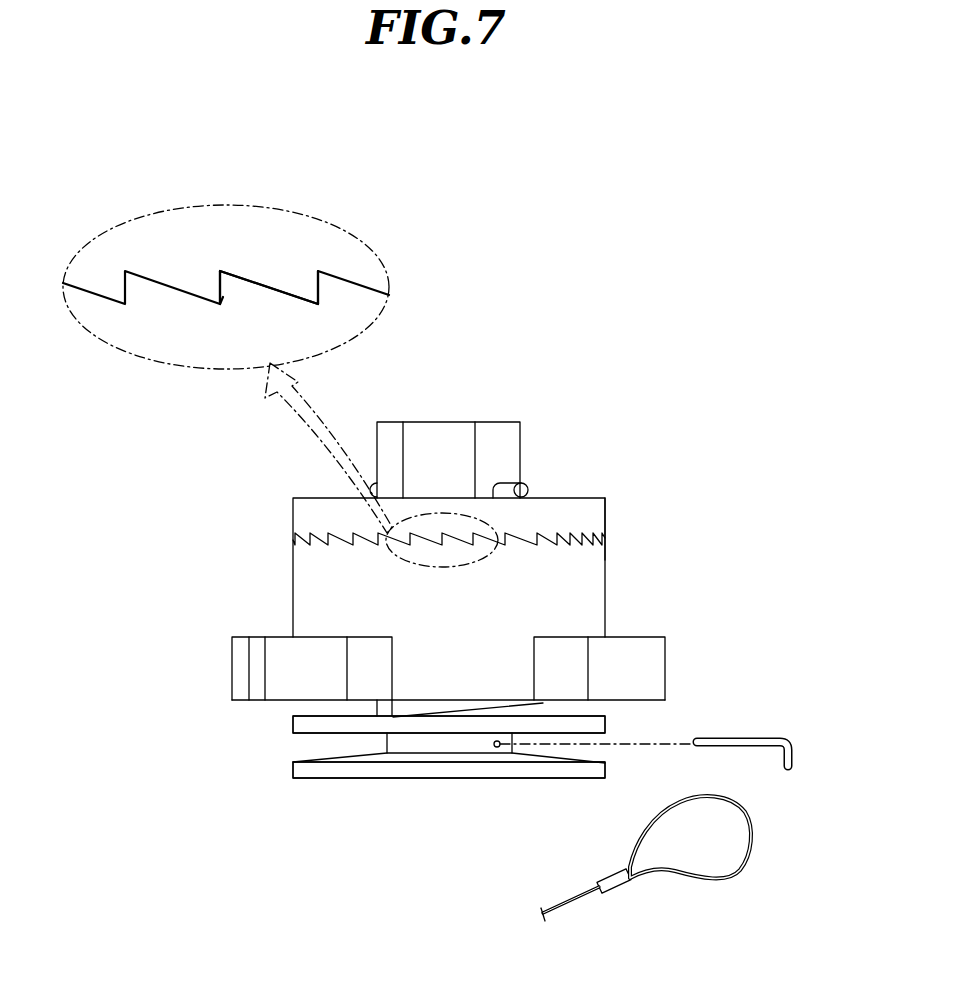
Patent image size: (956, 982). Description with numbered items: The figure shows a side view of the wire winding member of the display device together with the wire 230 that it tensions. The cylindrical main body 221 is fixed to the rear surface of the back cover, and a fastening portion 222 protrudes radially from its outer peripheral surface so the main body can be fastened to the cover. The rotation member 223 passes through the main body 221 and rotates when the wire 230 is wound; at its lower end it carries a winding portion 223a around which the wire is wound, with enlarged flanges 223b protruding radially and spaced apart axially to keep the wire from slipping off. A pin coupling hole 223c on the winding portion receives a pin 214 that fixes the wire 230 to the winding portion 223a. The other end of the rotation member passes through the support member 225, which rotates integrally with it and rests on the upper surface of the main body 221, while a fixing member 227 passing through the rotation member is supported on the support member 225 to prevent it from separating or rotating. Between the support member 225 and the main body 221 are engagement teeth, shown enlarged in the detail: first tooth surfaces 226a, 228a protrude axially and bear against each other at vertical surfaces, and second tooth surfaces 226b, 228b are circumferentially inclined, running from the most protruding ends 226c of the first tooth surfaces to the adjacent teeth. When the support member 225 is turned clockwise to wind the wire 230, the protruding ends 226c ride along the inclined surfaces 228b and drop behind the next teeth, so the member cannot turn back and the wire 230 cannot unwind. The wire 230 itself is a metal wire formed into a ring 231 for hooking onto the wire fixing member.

The pin 214 is at (763, 738).
The main body 221 is at (590, 576).
The fastening portion 222 is at (655, 668).
The rotation member 223 is at (463, 433).
The winding portion 223a is at (250, 758).
The enlarged flanges 223b is at (330, 733).
The pin coupling hole 223c is at (494, 745).
The support member 225 is at (584, 510).
The first tooth surface 226a is at (218, 275).
The second tooth surface 226b is at (258, 279).
The most protruding end of first tooth surface 226c is at (220, 298).
The fixing member 227 is at (502, 483).
The first tooth surface 228a is at (223, 297).
The second tooth surface 228b is at (298, 303).
The wire 230 is at (685, 883).
The ring 231 is at (747, 810).